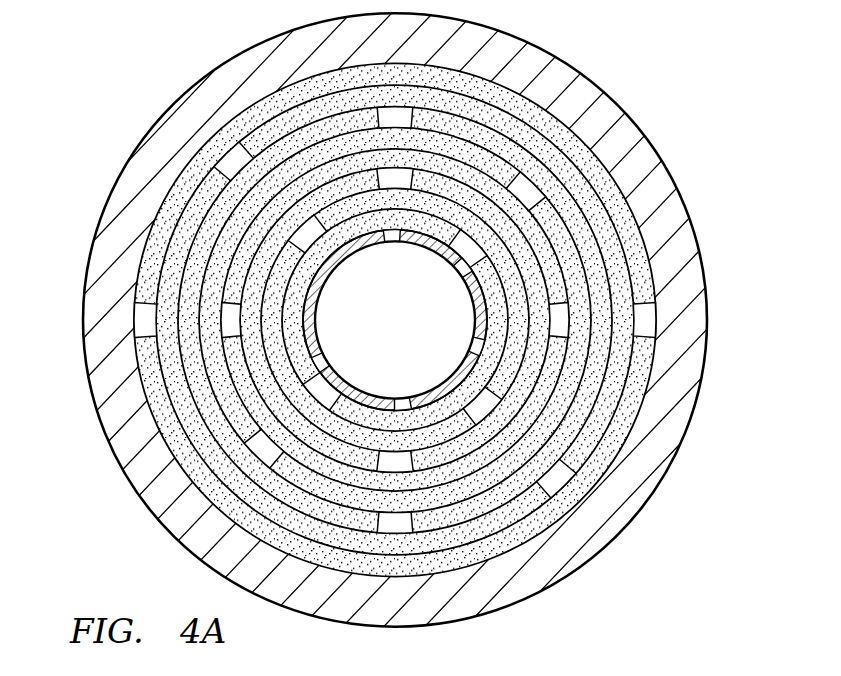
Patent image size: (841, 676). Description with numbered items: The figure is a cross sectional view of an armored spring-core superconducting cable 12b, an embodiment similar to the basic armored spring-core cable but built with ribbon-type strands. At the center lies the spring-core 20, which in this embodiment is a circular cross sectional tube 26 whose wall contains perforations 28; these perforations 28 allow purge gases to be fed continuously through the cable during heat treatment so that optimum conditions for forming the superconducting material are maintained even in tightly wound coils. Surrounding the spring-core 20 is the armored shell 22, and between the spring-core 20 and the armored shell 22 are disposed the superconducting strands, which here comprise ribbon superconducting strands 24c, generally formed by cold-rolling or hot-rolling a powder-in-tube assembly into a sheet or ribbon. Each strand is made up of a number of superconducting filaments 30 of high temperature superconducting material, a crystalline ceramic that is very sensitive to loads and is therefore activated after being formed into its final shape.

The armored spring-core superconducting cable 12b is at (596, 80).
The spring-core 20 is at (317, 317).
The armored shell 22 is at (95, 343).
The ribbon superconducting strand 24c is at (503, 367).
The tube 26 is at (478, 298).
The perforations 28 is at (384, 242).
The superconducting filaments 30 is at (203, 473).